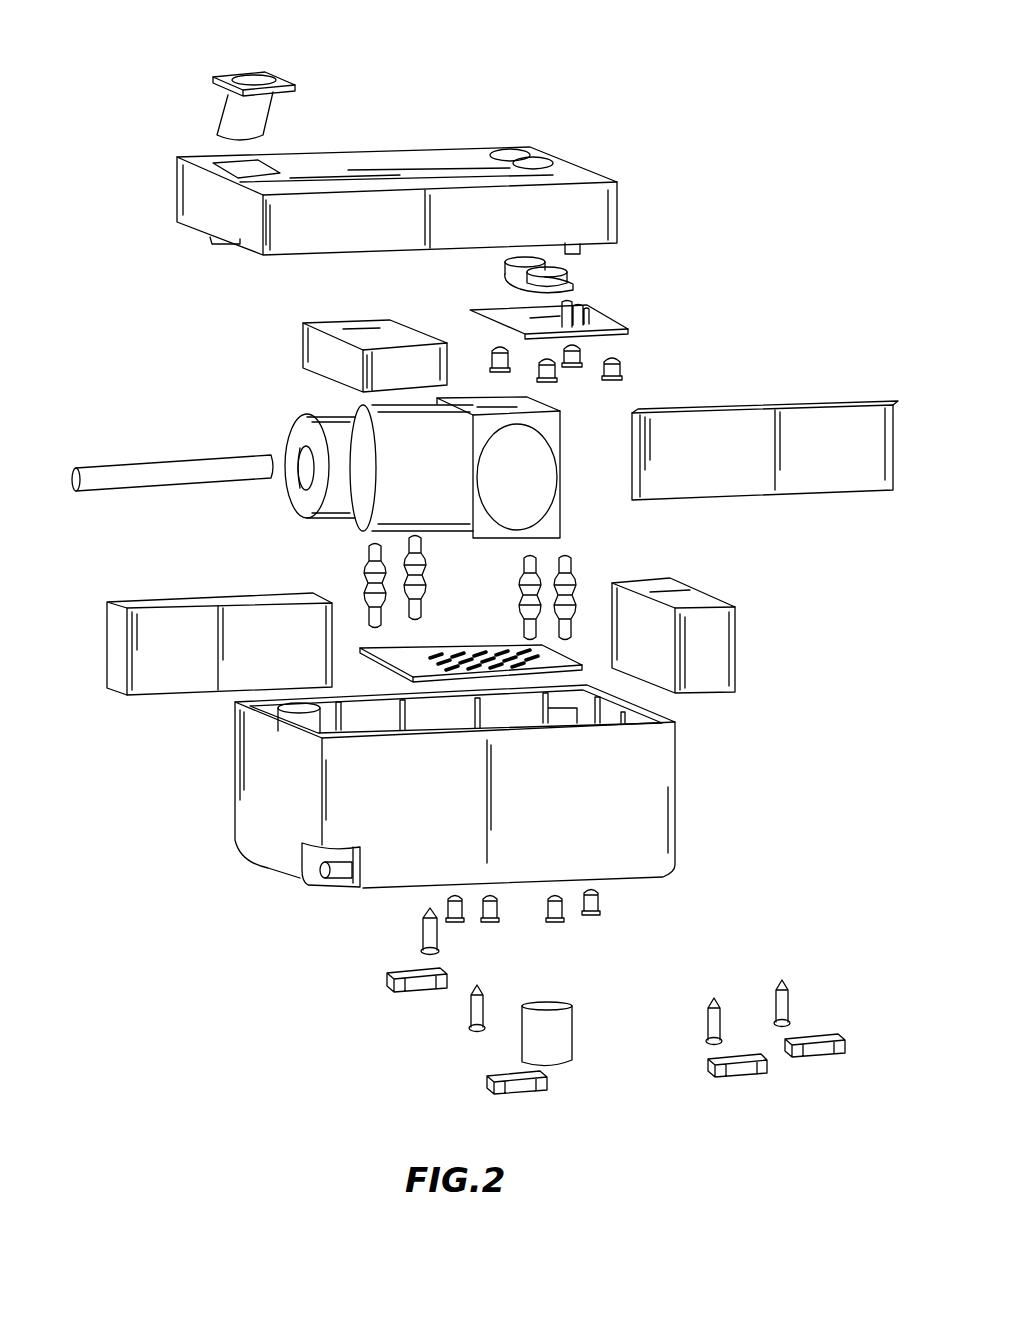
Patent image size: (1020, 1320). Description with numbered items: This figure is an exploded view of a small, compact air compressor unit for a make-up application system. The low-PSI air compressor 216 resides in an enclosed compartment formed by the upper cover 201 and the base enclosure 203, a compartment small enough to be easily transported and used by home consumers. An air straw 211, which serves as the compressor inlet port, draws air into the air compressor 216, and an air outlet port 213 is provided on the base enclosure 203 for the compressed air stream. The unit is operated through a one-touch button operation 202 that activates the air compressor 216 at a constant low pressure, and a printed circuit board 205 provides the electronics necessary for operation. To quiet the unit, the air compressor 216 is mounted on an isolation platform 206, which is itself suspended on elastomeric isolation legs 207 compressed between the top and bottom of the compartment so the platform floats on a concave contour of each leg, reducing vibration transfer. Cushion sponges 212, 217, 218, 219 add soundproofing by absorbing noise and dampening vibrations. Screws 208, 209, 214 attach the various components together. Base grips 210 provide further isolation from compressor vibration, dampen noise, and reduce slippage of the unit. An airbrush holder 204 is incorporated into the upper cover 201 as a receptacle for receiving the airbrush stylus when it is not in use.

The upper cover 201 is at (465, 147).
The one-touch button operation 202 is at (567, 272).
The base enclosure 203 is at (235, 845).
The airbrush holder 204 is at (225, 77).
The printed circuit board 205 is at (590, 312).
The isolation platform 206 is at (433, 648).
The isolation legs 207 is at (368, 553).
The screws 208 is at (597, 893).
The screw 209 is at (420, 923).
The base grips 210 is at (413, 993).
The air straw 211 is at (118, 467).
The cushion sponge 212 is at (565, 1067).
The air outlet port 213 is at (302, 868).
The screws 214 is at (621, 362).
The air compressor 216 is at (295, 432).
The cushion sponge 217 is at (735, 633).
The cushion sponge 218 is at (827, 498).
The cushion sponge 219 is at (298, 343).